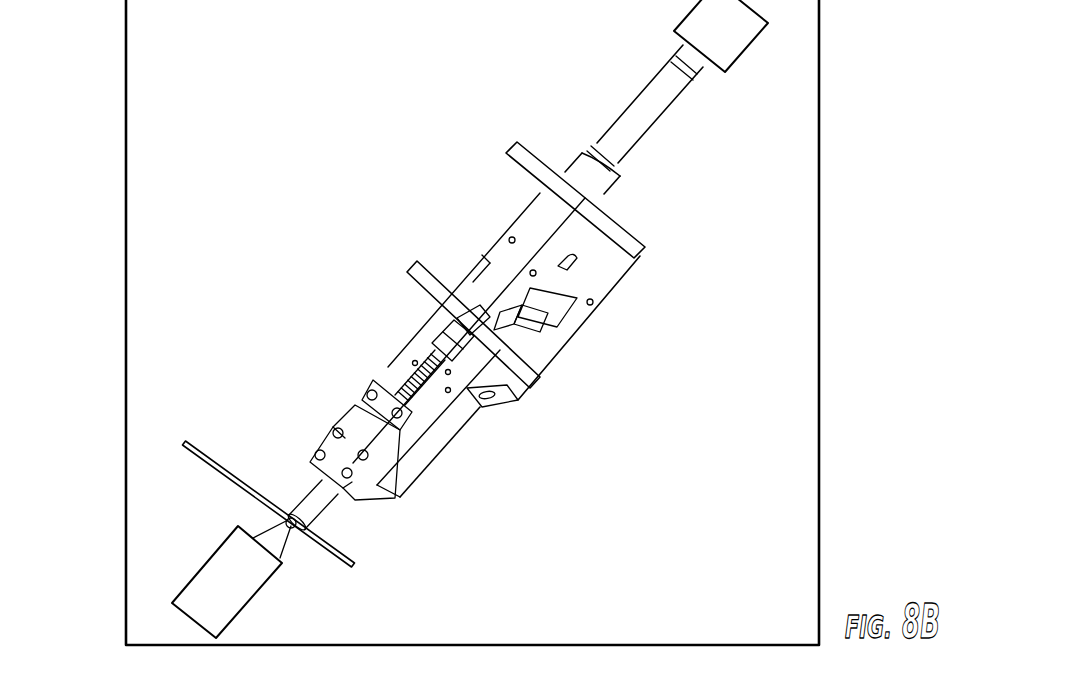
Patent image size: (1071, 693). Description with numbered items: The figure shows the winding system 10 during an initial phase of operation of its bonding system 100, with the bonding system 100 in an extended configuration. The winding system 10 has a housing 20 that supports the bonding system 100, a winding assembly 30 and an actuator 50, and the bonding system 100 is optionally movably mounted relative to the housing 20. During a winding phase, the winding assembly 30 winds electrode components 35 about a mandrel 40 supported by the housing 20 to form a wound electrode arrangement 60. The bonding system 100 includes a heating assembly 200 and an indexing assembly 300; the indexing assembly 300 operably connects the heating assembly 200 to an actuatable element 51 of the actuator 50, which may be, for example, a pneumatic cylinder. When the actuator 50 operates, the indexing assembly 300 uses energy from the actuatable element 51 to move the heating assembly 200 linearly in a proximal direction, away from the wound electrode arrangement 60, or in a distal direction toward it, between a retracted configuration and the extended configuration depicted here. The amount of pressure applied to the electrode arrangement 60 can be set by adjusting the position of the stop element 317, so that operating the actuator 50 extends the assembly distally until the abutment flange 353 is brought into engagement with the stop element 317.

The winding system 10 is at (86, 94).
The housing 20 is at (126, 228).
The winding assembly 30 is at (200, 543).
The electrode components 35 is at (290, 553).
The mandrel 40 is at (328, 527).
The actuator 50 is at (592, 108).
The actuatable element 51 is at (560, 278).
The wound electrode arrangement 60 is at (288, 502).
The bonding system 100 is at (340, 290).
The heating assembly 200 is at (312, 414).
The indexing assembly 300 is at (460, 222).
The stop element 317 is at (525, 328).
The abutment flange 353 is at (548, 316).